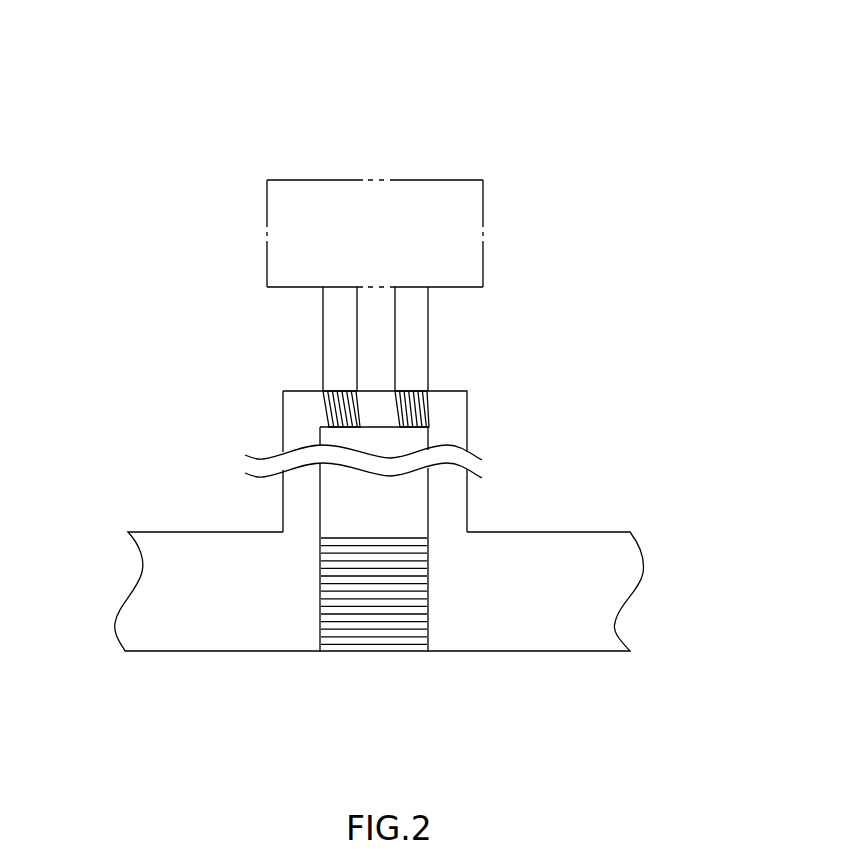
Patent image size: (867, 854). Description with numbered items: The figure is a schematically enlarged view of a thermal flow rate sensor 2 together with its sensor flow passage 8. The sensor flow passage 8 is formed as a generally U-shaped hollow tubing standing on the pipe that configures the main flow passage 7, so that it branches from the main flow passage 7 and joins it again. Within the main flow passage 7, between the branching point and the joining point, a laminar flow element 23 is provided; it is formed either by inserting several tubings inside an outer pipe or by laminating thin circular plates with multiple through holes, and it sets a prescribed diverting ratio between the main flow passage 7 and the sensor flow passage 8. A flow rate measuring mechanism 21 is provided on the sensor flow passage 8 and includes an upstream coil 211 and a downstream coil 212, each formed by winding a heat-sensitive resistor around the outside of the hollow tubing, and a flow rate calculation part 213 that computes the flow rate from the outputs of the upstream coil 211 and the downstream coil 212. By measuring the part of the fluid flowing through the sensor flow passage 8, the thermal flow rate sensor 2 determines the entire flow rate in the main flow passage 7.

The thermal flow rate sensor 2 is at (534, 106).
The flow rate measuring mechanism 21 is at (500, 308).
The upstream coil 211 is at (323, 398).
The downstream coil 212 is at (426, 400).
The flow rate calculation part 213 is at (484, 232).
The laminar flow element 23 is at (373, 652).
The main flow passage 7 is at (267, 604).
The sensor flow passage 8 is at (455, 404).